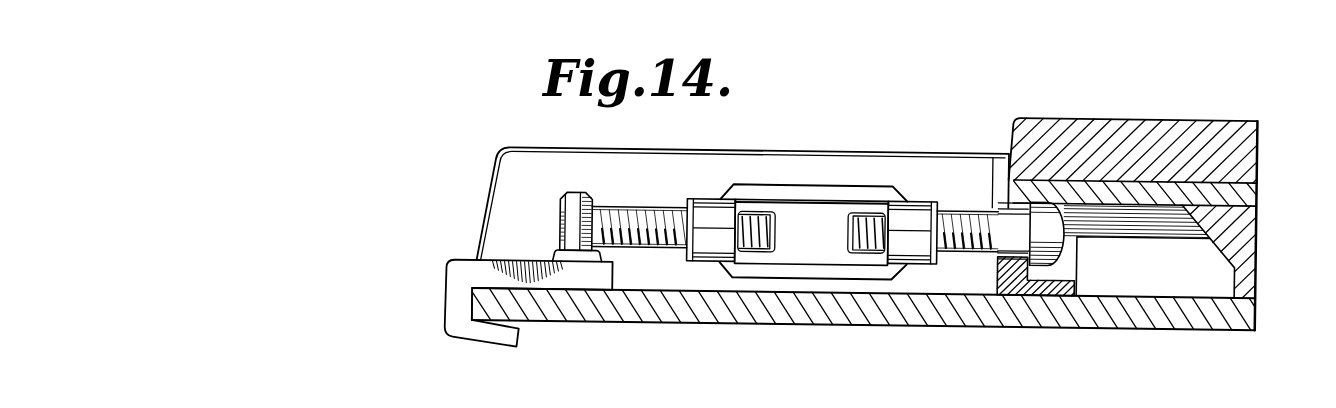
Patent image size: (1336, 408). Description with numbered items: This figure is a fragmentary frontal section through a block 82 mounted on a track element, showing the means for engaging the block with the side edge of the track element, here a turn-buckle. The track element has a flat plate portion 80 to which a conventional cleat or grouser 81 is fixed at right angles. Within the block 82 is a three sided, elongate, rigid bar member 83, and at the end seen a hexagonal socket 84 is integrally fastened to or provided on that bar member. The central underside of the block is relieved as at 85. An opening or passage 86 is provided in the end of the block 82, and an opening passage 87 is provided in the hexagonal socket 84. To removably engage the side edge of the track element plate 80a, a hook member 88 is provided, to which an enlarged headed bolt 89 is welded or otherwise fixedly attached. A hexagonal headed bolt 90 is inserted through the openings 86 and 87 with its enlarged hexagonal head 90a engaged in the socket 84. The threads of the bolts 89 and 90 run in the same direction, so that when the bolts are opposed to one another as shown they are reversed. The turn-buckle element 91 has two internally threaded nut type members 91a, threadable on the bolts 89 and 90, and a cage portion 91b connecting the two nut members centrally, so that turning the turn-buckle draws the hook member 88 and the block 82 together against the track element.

The flat plate portion 80 is at (855, 320).
The side edge of track element plate 80a is at (472, 315).
The cleat or grouser 81 is at (810, 160).
The block 82 is at (1125, 116).
The rigid bar member 83 is at (1258, 187).
The hexagonal socket 84 is at (1047, 276).
The relieved underside 85 is at (1215, 245).
The opening or passage 86 is at (993, 208).
The opening passage 87 is at (1040, 201).
The hook member 88 is at (458, 268).
The enlarged headed bolt 89 is at (650, 216).
The hexagonal headed bolt 90 is at (975, 248).
The enlarged hexagonal head 90a is at (1060, 248).
The turn-buckle element 91 is at (843, 184).
The internally threaded nut type members 91a is at (702, 269).
The cage portion 91b is at (820, 197).